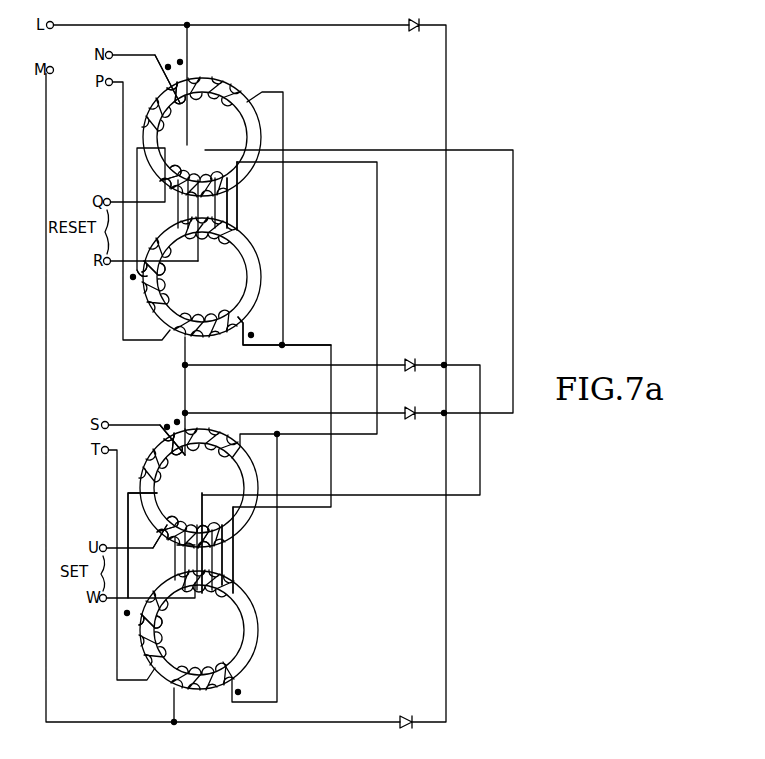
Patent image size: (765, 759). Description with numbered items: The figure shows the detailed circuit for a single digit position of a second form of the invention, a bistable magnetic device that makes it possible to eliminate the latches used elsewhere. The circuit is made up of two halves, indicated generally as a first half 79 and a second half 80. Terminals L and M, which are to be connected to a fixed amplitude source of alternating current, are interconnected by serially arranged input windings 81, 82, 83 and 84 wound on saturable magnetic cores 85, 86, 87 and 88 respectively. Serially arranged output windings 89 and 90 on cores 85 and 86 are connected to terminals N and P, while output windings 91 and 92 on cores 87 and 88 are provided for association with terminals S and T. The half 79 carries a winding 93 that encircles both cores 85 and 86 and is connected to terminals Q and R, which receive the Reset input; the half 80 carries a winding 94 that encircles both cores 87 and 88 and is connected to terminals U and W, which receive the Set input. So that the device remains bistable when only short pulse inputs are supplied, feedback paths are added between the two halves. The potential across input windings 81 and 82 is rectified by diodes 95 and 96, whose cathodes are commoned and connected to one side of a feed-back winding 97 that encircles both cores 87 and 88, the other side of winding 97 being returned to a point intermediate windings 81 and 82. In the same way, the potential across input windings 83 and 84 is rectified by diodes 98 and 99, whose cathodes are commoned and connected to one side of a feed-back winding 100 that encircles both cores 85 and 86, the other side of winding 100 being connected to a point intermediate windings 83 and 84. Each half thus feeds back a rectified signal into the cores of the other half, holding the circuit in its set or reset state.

The first half of the bistable circuit 79 is at (262, 212).
The second half of the bistable circuit 80 is at (245, 562).
The input winding 81 is at (205, 80).
The input winding 82 is at (232, 304).
The input winding 83 is at (198, 488).
The input winding 84 is at (205, 670).
The saturable magnetic core 85 is at (246, 98).
The saturable magnetic core 86 is at (250, 252).
The saturable magnetic core 87 is at (246, 524).
The saturable magnetic core 88 is at (248, 600).
The output winding 89 is at (179, 111).
The output winding 90 is at (160, 280).
The output winding 91 is at (176, 468).
The output winding 92 is at (157, 635).
The reset winding 93 is at (172, 169).
The set winding 94 is at (188, 530).
The diode 95 is at (420, 27).
The diode 96 is at (410, 357).
The feed-back winding 97 is at (214, 530).
The diode 98 is at (410, 421).
The diode 99 is at (405, 714).
The feed-back winding 100 is at (240, 213).